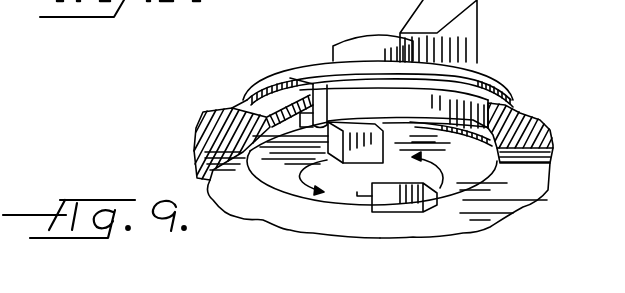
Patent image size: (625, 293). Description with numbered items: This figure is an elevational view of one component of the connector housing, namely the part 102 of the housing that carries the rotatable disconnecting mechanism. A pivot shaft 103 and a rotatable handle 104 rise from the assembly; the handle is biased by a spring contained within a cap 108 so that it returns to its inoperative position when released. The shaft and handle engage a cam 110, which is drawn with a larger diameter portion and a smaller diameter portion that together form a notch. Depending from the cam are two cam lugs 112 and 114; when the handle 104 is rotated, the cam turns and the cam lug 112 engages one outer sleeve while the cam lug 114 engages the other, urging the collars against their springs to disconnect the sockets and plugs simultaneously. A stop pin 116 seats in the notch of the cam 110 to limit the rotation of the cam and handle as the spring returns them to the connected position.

The part of the housing 102 is at (210, 120).
The pivot shaft 103 is at (367, 32).
The rotatable handle 104 is at (470, 26).
The cap 108 is at (314, 63).
The cam 110 is at (258, 162).
The cam lug 112 is at (347, 163).
The cam lug 114 is at (430, 207).
The stop pin 116 is at (303, 100).